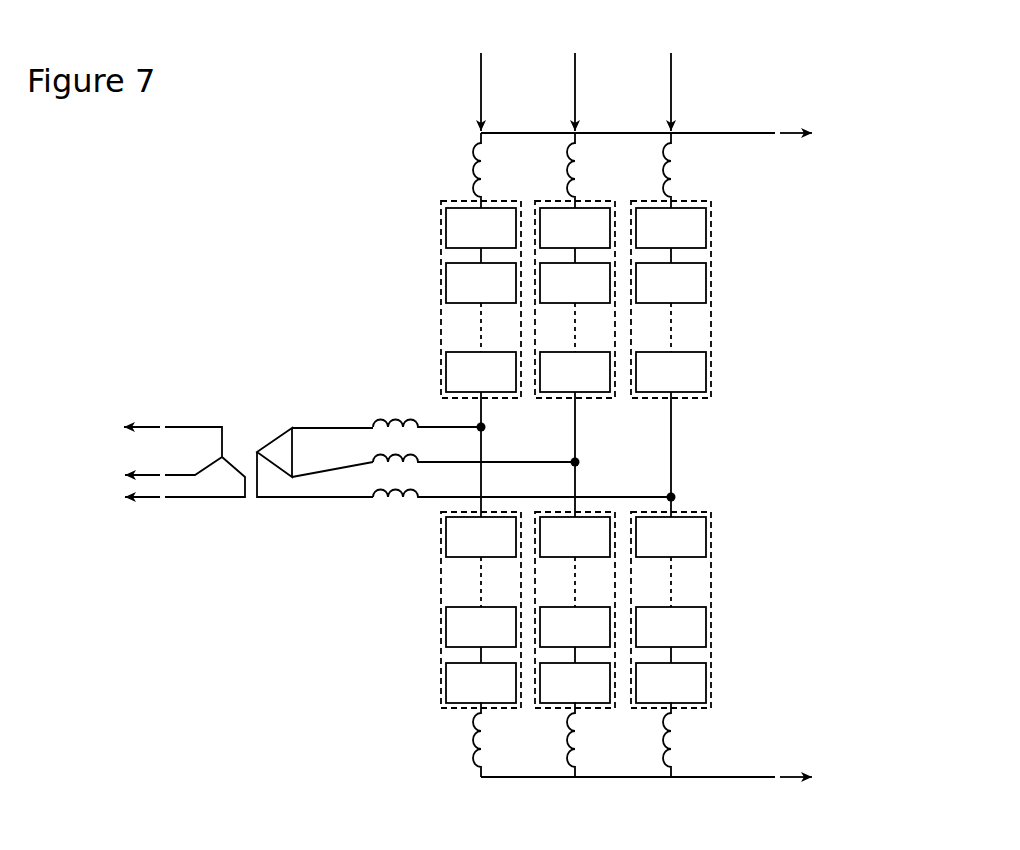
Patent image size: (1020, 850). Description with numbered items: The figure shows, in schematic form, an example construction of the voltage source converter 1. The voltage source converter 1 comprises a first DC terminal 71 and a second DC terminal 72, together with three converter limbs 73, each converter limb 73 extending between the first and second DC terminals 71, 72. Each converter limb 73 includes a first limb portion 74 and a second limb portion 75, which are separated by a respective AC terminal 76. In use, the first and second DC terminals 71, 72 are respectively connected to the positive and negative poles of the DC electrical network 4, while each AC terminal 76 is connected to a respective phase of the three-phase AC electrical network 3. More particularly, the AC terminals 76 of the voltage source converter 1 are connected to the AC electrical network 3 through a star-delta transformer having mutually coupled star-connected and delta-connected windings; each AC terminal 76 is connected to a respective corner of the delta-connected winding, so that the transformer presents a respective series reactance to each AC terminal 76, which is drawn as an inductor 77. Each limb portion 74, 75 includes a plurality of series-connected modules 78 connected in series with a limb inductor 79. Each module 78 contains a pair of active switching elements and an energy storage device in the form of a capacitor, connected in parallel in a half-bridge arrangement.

The voltage source converter 1 is at (333, 80).
The three-phase AC electrical network 3 is at (125, 470).
The DC electrical network 4 is at (815, 458).
The first DC terminal 71 is at (669, 136).
The second DC terminal 72 is at (669, 779).
The converter limb 73 is at (573, 76).
The first limb portion 74 is at (426, 279).
The second limb portion 75 is at (419, 596).
The AC terminal 76 is at (489, 421).
The inductor 77 is at (365, 492).
The series-connected module 78 is at (576, 455).
The limb inductor 79 is at (486, 169).